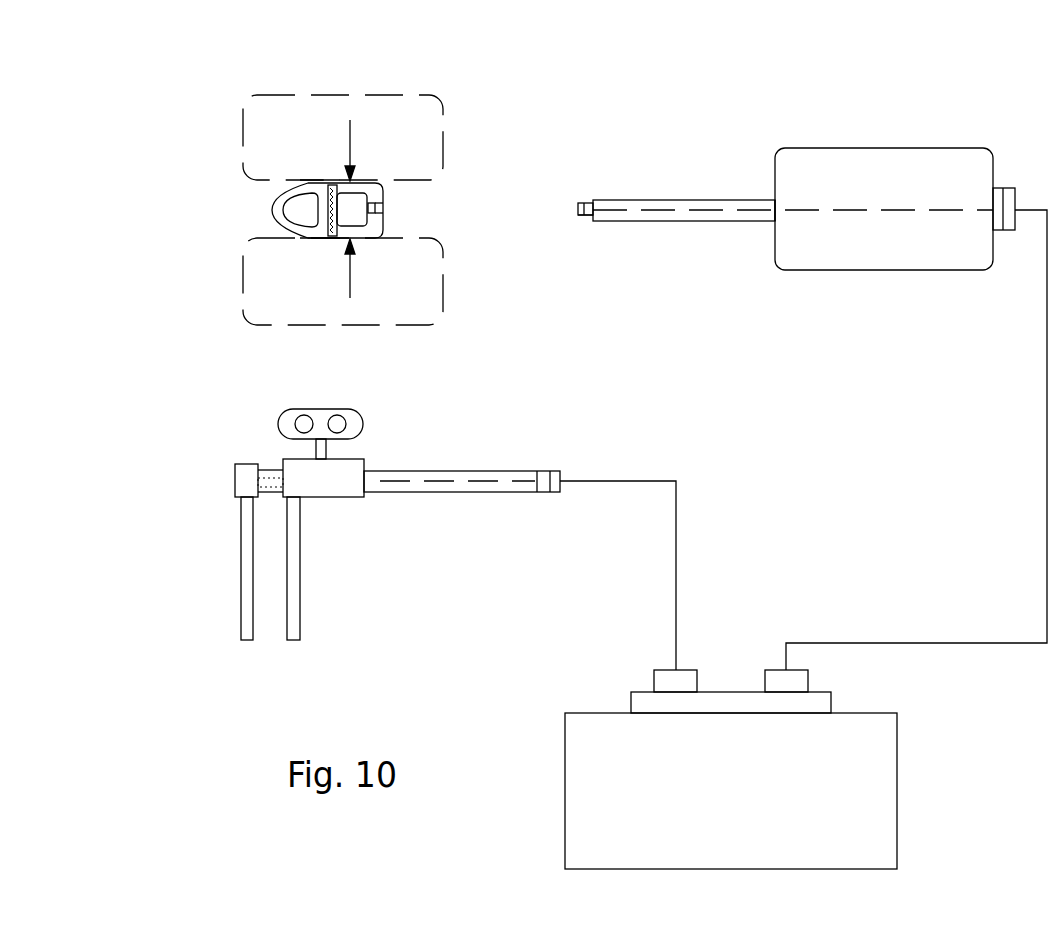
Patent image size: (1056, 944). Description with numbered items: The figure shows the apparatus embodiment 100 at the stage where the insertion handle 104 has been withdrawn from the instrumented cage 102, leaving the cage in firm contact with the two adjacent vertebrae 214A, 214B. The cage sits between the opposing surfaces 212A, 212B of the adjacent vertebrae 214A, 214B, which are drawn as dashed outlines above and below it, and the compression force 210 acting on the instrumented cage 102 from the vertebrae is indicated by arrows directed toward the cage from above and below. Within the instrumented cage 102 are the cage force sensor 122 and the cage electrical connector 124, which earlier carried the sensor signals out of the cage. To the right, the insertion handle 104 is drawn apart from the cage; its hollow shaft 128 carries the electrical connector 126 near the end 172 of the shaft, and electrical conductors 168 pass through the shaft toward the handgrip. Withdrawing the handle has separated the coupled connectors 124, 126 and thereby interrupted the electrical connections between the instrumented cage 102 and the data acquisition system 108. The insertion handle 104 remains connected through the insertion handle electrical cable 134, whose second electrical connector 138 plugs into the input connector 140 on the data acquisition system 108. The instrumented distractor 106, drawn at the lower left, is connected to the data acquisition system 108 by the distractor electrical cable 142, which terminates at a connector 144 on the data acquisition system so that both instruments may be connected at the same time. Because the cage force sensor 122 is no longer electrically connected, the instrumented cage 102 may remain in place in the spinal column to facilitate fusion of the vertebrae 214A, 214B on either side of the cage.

The apparatus embodiment 100 is at (636, 62).
The instrumented cage 102 is at (383, 192).
The insertion handle 104 is at (817, 300).
The instrumented distractor 106 is at (440, 418).
The data acquisition system 108 is at (882, 851).
The cage force sensor 122 is at (332, 182).
The cage electrical connector 124 is at (373, 183).
The electrical connector 126 is at (578, 206).
The shaft 128 is at (685, 198).
The insertion handle electrical cable 134 is at (965, 642).
The second electrical connector 138 is at (765, 671).
The input connector 140 is at (631, 692).
The distractor electrical cable 142 is at (676, 478).
The connector 144 is at (654, 669).
The electrical conductors 168 is at (773, 200).
The end 172 is at (580, 235).
The force 210 is at (348, 140).
The opposing surface 212A is at (260, 183).
The opposing surface 212B is at (273, 239).
The adjacent vertebra 214A is at (243, 107).
The adjacent vertebra 214B is at (243, 297).